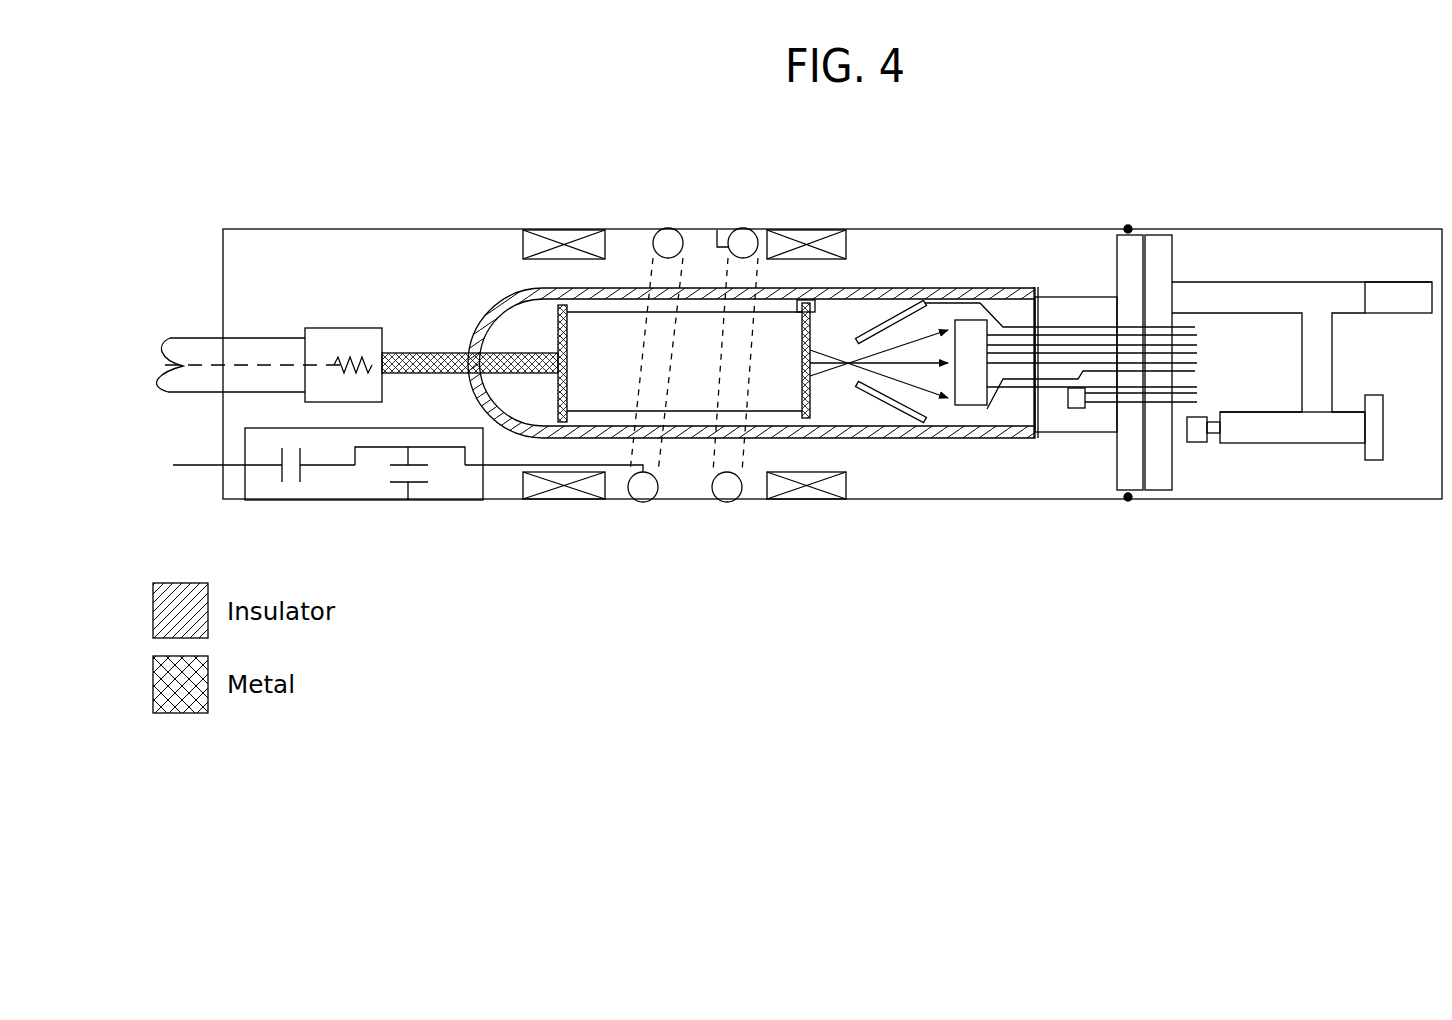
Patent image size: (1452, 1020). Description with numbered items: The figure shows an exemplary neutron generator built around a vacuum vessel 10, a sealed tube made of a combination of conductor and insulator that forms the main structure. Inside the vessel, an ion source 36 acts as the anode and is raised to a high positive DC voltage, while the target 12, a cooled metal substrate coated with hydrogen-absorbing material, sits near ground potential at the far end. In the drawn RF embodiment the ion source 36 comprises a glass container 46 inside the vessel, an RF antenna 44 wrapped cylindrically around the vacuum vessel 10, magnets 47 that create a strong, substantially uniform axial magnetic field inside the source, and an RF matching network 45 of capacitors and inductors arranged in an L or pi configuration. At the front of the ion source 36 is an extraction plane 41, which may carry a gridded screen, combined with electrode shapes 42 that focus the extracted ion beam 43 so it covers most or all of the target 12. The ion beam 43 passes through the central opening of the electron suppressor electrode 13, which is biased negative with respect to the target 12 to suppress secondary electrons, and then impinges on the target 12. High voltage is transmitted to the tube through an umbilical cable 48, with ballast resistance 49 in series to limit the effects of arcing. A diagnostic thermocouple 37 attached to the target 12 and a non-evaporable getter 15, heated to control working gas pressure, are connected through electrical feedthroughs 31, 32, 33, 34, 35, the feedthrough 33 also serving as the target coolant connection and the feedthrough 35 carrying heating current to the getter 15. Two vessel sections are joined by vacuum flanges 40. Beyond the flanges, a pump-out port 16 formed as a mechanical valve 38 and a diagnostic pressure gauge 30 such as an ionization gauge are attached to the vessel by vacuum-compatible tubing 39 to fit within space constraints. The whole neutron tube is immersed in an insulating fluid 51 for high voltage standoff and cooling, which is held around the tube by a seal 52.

The vacuum vessel 10 is at (887, 288).
The target 12 is at (980, 318).
The electron suppressor electrode 13 is at (912, 305).
The non-evaporable getter 15 is at (1076, 408).
The pump-out port 16 is at (1373, 462).
The diagnostic pressure gauge 30 is at (1388, 294).
The electrical feedthrough 31 is at (437, 365).
The electrical feedthrough 32 is at (1193, 327).
The electrical feedthrough 33 is at (1197, 367).
The electrical feedthrough 34 is at (1195, 378).
The electrical feedthrough 35 is at (1192, 392).
The ion source 36 is at (636, 300).
The thermocouple 37 is at (963, 405).
The mechanical valve 38 is at (1278, 433).
The vacuum-compatible tubing 39 is at (1337, 294).
The vacuum flanges 40 is at (1153, 253).
The extraction plane 41 is at (805, 325).
The electrode shapes 42 is at (809, 303).
The ion beam 43 is at (897, 395).
The RF antenna 44 is at (674, 234).
The RF matching network 45 is at (360, 487).
The glass container 46 is at (585, 418).
The magnets 47 is at (737, 500).
The umbilical cable 48 is at (200, 338).
The ballast resistance 49 is at (323, 342).
The insulating fluid 51 is at (435, 260).
The seal 52 is at (1128, 229).